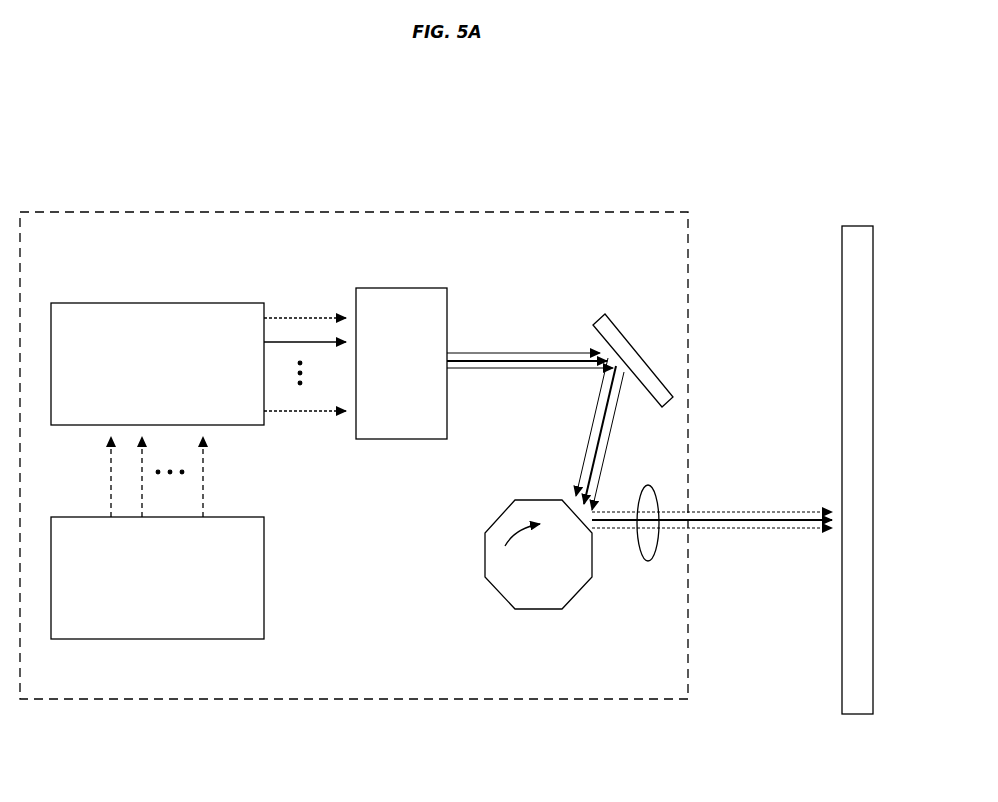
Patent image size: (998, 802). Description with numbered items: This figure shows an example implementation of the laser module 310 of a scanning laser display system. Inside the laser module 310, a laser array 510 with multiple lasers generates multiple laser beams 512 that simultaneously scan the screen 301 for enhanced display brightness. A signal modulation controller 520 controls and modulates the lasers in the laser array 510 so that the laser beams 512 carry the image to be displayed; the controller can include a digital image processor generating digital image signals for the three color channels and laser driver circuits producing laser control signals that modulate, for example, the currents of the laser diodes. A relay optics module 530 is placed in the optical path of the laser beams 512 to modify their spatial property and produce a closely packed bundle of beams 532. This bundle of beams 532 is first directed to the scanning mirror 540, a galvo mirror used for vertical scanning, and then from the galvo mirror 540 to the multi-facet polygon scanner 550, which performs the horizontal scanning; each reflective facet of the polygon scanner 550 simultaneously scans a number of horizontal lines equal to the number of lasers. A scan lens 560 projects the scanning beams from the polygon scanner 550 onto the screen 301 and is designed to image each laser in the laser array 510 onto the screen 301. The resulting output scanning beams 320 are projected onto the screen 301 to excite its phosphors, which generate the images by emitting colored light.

The laser module 310 is at (310, 212).
The laser array 510 is at (157, 364).
The signal modulation controller 520 is at (157, 538).
The laser beams 512 is at (310, 310).
The relay optics module 530 is at (401, 363).
The closely packed bundle of beams 532 is at (557, 382).
The scanning mirror 540 is at (603, 320).
The polygon scanner 550 is at (492, 562).
The scan lens 560 is at (648, 545).
The scanning beams 320 is at (737, 503).
The screen 301 is at (873, 684).